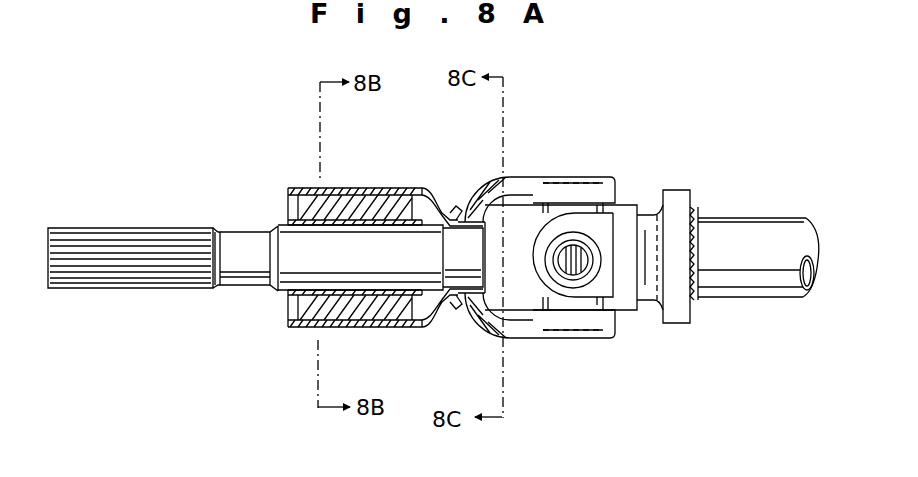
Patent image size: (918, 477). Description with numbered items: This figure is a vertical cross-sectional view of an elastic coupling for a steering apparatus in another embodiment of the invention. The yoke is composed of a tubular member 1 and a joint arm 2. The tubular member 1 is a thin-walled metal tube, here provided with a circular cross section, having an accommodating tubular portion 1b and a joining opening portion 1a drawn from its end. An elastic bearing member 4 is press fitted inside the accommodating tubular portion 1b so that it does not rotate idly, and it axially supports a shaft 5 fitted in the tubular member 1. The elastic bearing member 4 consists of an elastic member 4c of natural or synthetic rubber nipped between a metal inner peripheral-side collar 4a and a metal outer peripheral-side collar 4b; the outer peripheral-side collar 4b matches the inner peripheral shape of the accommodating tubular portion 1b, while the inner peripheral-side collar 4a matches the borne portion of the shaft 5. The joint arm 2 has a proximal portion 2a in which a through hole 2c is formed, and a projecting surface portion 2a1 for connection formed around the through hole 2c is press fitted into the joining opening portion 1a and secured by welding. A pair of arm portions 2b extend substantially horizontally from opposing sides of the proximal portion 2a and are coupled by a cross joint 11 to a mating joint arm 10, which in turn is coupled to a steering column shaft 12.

The tubular member 1 is at (380, 198).
The joining opening portion 1a is at (451, 188).
The accommodating tubular portion 1b is at (396, 187).
The joint arm 2 is at (533, 250).
The proximal portion 2a is at (466, 330).
The projecting surface portion for connection 2a1 is at (437, 186).
The arm portions 2b is at (604, 176).
The through hole 2c is at (495, 340).
The elastic bearing member 4 is at (336, 282).
The inner peripheral-side collar 4a is at (286, 321).
The outer peripheral-side collar 4b is at (290, 292).
The elastic member 4c is at (284, 310).
The shaft 5 is at (166, 226).
The mating joint arm 10 is at (629, 215).
The cross joint 11 is at (533, 338).
The steering column shaft 12 is at (764, 218).